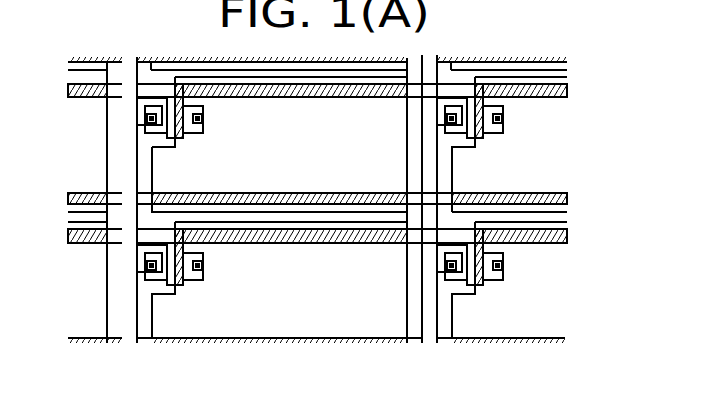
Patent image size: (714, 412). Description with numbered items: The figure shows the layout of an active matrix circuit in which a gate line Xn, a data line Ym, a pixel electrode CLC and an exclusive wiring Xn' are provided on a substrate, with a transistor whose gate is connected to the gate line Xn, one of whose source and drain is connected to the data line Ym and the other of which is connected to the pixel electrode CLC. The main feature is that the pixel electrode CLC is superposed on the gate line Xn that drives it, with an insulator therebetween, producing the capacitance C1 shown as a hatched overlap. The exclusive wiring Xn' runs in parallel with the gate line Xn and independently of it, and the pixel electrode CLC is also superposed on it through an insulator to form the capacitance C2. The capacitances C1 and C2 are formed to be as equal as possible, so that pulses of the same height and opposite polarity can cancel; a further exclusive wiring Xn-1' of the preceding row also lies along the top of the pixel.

The storage capacitor line (row n-1) Xn-1' is at (344, 62).
The gate line Xn is at (335, 98).
The exclusive wiring Xn' is at (336, 196).
The data line Ym is at (133, 223).
The picture-element electrode CLC is at (157, 166).
The capacitance C2 is at (240, 198).
The capacitance C1 is at (338, 94).